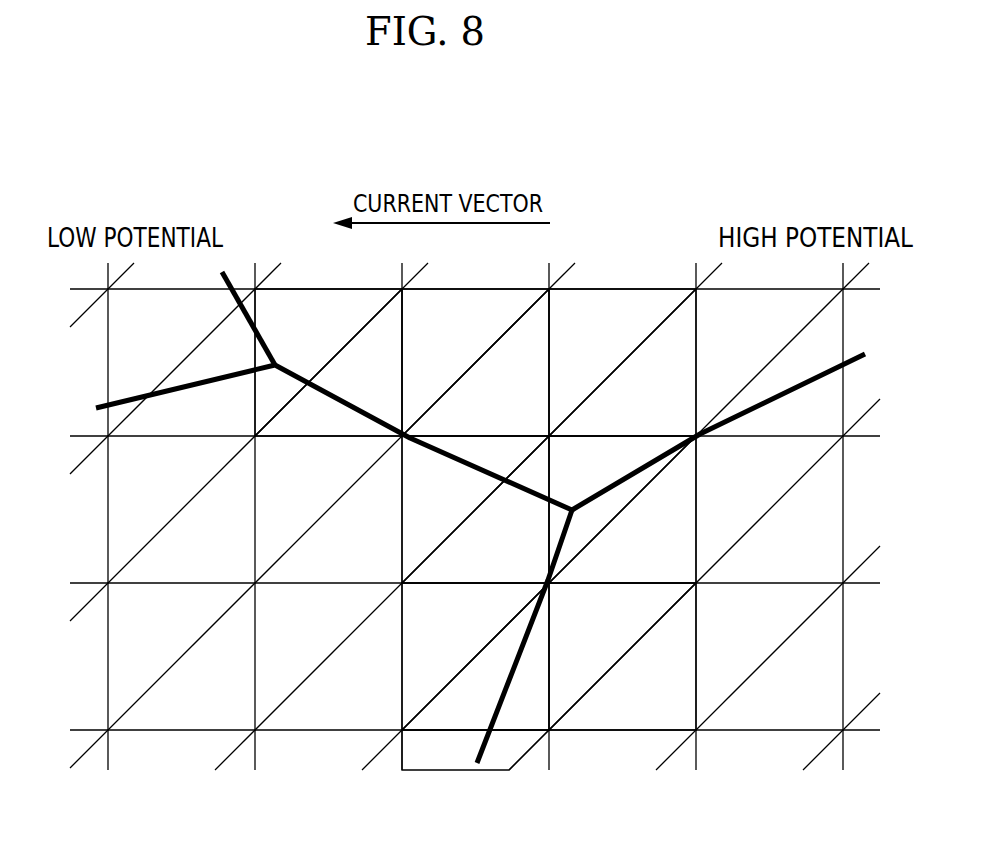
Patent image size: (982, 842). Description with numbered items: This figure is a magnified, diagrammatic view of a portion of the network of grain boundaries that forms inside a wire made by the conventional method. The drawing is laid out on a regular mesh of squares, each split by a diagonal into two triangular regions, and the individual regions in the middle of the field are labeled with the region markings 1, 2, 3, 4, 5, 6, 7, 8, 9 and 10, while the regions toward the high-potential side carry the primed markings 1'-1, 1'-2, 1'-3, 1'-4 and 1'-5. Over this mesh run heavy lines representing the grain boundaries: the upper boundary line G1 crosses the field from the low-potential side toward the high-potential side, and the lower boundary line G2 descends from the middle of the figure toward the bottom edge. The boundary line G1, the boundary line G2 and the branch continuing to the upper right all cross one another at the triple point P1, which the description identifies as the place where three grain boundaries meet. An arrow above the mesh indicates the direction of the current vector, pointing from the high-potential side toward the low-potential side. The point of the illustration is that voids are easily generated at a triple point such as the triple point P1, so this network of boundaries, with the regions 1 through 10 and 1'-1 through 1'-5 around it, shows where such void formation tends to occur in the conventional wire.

The mesh element 1 is at (622, 509).
The mesh element 2 is at (475, 509).
The mesh element 3 is at (475, 509).
The mesh element 4 is at (475, 362).
The mesh element 5 is at (475, 362).
The mesh element 6 is at (328, 362).
The mesh element 7 is at (328, 362).
The mesh element 8 is at (475, 656).
The mesh element 9 is at (475, 656).
The mesh element 10 is at (475, 750).
The mesh element 1'-1 is at (622, 362).
The mesh element 1'-2 is at (622, 362).
The mesh element 1'-3 is at (622, 509).
The mesh element 1'-4 is at (622, 656).
The mesh element 1'-5 is at (622, 656).
The first boundary line G1 is at (338, 398).
The second boundary line G2 is at (518, 652).
The triple point P1 is at (575, 512).